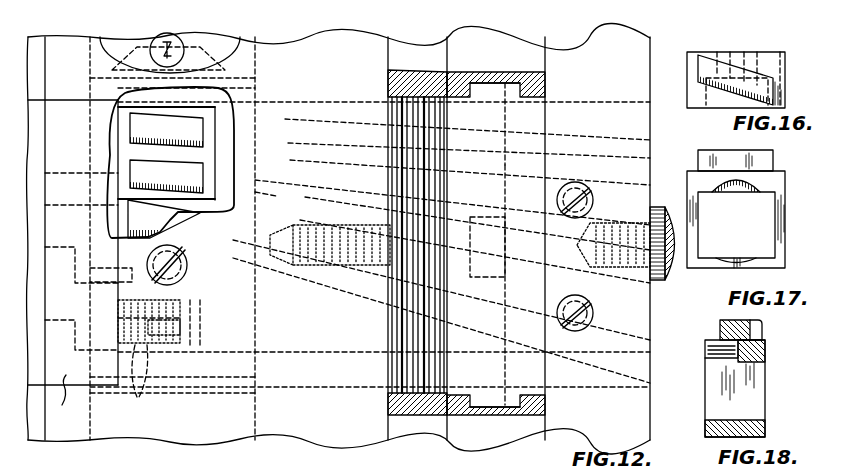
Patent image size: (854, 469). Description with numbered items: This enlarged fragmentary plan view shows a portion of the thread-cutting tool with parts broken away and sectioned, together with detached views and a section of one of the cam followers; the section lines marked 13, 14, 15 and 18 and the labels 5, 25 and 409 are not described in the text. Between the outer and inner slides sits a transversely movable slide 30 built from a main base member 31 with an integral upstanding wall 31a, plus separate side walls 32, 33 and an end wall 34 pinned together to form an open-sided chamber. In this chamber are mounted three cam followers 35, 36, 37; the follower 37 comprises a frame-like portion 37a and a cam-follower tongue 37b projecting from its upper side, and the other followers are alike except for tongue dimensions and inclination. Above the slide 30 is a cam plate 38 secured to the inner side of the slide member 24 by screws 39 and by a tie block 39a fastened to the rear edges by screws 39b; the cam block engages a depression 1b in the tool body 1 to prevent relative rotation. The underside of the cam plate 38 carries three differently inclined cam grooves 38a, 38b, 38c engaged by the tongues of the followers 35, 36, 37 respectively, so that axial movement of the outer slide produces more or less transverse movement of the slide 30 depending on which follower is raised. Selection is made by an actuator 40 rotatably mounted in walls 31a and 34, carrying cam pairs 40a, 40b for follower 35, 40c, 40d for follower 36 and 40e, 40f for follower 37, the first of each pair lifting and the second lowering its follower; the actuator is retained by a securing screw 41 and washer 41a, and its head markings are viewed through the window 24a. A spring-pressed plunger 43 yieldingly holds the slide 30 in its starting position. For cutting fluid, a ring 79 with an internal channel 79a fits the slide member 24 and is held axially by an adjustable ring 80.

In FIG. 12, the tool body 1 is at (338, 237).
In FIG. 12, the depression 1b is at (34, 104).
In FIG. 12, the spring 5 is at (370, 268).
In FIG. 12, the section line 13- 13 is at (168, 42).
In FIG. 12, the section line 14- 14 is at (478, 462).
In FIG. 12, the section line 15- 15 is at (528, 462).
In FIG. 17, the section line 18- 18 is at (735, 150).
In FIG. 12, the slide member 24 is at (343, 46).
In FIG. 12, the window 24a is at (230, 37).
In FIG. 12, the knob 25 is at (658, 281).
In FIG. 12, the transversely movable slide 30 is at (240, 305).
In FIG. 12, the main base member 31 is at (255, 388).
In FIG. 12, the upstanding wall 31a is at (212, 306).
In FIG. 12, the side wall 32 is at (92, 268).
In FIG. 12, the side wall 33 is at (275, 310).
In FIG. 12, the end wall 34 is at (100, 72).
In FIG. 12, the cam follower 35 is at (118, 118).
In FIG. 12, the cam follower 36 is at (130, 160).
In FIG. 12, the cam follower 37 is at (130, 200).
In FIG. 16, the cam follower 37 is at (778, 56).
In FIG. 17, the cam follower 37 is at (780, 196).
In FIG. 18, the cam follower 37 is at (767, 353).
In FIG. 16, the frame-like portion 37a is at (784, 76).
In FIG. 17, the frame-like portion 37a is at (783, 223).
In FIG. 18, the frame-like portion 37a is at (770, 377).
In FIG. 12, the cam-follower tongue 37b is at (128, 232).
In FIG. 16, the cam-follower tongue 37b is at (724, 58).
In FIG. 17, the cam-follower tongue 37b is at (775, 163).
In FIG. 18, the cam-follower tongue 37b is at (764, 328).
In FIG. 12, the cam plate 38 is at (328, 102).
In FIG. 12, the cam groove 38a is at (518, 152).
In FIG. 12, the cam groove 38b is at (518, 226).
In FIG. 12, the cam groove 38c is at (520, 282).
In FIG. 12, the screws 39 is at (200, 262).
In FIG. 12, the tie block 39a is at (47, 422).
In FIG. 12, the screws 39b is at (110, 407).
In FIG. 12, the actuator 40 is at (255, 62).
In FIG. 12, the cam 40a is at (453, 123).
In FIG. 12, the cam 40b is at (455, 144).
In FIG. 12, the cam 40c is at (454, 168).
In FIG. 12, the cam 40d is at (452, 192).
In FIG. 12, the cam 40e is at (452, 218).
In FIG. 12, the cam 40f is at (460, 246).
In FIG. 12, the securing screw 41 is at (190, 345).
In FIG. 12, the washer 41a is at (210, 346).
In FIG. 12, the spring-pressed plunger 43 is at (330, 254).
In FIG. 12, the ring 79 is at (545, 53).
In FIG. 12, the channel 79a is at (545, 80).
In FIG. 12, the adjustable ring 80 is at (388, 53).
In FIG. 12, the cam lobe 409 is at (172, 35).